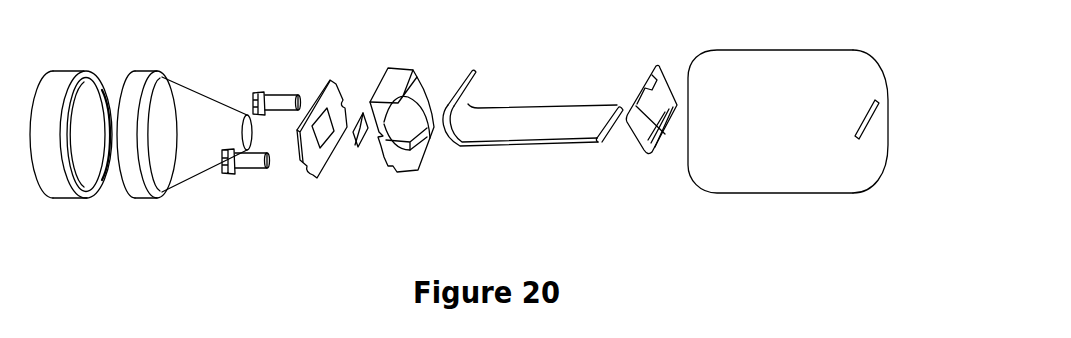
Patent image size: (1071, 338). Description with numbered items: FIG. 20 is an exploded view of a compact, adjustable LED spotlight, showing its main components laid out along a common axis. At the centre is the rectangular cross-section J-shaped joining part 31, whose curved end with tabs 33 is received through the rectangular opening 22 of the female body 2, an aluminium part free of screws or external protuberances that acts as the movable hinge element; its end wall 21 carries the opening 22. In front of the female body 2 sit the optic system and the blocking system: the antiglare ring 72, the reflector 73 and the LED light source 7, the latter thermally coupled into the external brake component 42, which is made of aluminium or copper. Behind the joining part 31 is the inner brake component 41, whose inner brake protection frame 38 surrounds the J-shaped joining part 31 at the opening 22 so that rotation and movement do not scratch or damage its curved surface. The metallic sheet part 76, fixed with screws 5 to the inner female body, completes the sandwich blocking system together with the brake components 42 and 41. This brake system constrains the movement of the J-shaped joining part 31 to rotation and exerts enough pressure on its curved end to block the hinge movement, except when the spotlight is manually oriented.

The female body 2 is at (817, 144).
The screws 5 is at (281, 90).
The LED light source 7 is at (359, 107).
The end wall 21 is at (877, 141).
The rectangular opening 22 is at (874, 125).
The J-shaped joining part 31 is at (535, 126).
The clip tabs 33 is at (469, 105).
The inner brake protection frame 38 is at (675, 129).
The inner brake component 41 is at (666, 145).
The external brake component 42 is at (384, 167).
The antiglare ring 72 is at (73, 67).
The reflector 73 is at (198, 106).
The metallic sheet part 76 is at (316, 182).